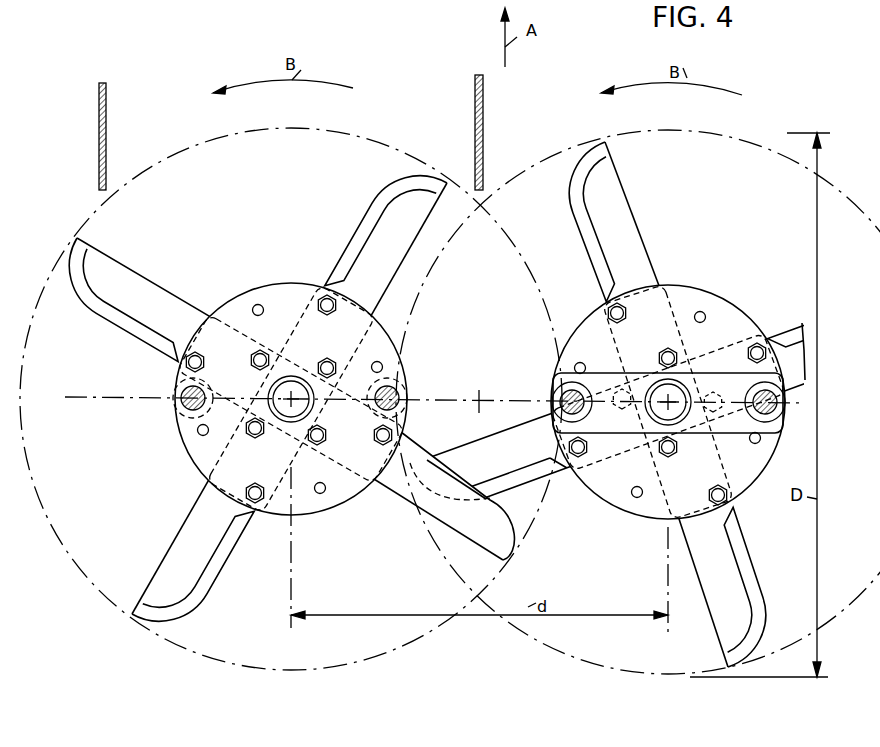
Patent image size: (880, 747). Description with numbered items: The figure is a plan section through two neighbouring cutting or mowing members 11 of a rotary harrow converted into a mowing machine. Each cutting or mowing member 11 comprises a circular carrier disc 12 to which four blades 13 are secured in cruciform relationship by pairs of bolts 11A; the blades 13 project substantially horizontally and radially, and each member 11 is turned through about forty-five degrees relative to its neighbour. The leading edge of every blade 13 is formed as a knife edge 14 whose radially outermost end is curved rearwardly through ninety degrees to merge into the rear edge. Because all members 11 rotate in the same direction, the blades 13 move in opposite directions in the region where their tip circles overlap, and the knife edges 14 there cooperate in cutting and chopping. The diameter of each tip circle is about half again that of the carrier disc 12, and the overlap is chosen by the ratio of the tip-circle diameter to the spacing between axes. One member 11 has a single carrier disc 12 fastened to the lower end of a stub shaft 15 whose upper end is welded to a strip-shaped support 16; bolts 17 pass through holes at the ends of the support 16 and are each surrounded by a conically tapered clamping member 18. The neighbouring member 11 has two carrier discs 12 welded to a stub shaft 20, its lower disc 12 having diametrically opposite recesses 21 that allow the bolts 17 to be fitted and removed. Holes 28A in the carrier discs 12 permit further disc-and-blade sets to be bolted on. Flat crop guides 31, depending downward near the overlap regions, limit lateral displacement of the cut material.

The cutting or mowing member 11 is at (170, 531).
The bolts 11A is at (340, 321).
The circular carrier disc 12 is at (279, 283).
The blades 13 is at (133, 271).
The knife edge 14 is at (100, 316).
The stub shaft 15 is at (673, 428).
The strip-shaped support 16 is at (622, 437).
The bolts 17 is at (190, 414).
The clamping member 18 is at (177, 412).
The stub shaft 20 is at (285, 420).
The recesses 21 is at (183, 388).
The holes 28A is at (256, 304).
The crop guide 31 is at (107, 125).